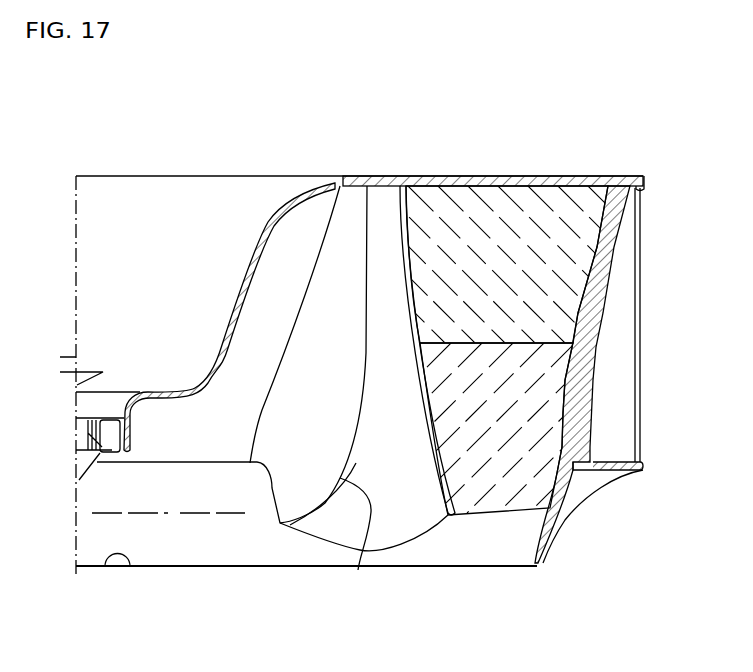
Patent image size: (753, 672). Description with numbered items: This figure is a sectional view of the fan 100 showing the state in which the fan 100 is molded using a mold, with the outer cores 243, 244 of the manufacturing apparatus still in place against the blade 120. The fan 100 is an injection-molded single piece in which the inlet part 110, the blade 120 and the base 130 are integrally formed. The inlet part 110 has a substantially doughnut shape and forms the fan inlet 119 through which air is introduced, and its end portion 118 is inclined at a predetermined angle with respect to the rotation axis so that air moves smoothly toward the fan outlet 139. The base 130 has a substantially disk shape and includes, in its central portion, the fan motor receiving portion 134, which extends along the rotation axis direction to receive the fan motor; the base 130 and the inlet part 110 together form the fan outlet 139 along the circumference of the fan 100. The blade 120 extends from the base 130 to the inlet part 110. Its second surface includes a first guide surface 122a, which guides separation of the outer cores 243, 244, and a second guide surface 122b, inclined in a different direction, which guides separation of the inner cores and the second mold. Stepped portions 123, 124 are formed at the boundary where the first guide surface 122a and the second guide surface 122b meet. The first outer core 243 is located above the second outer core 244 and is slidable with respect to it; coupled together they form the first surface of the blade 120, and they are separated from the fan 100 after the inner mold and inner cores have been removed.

The fan 100 is at (279, 126).
The inlet part 110 is at (167, 570).
The end portion 118 is at (540, 566).
The fan inlet 119 is at (105, 566).
The blade 120 is at (617, 313).
The first guide surface 122a is at (598, 234).
The second guide surface 122b is at (342, 525).
The stepped portion 123 is at (367, 241).
The stepped portion 124 is at (358, 570).
The base 130 is at (414, 173).
The fan motor receiving portion 134 is at (250, 247).
The fan outlet 139 is at (644, 188).
The first outer core 243 is at (530, 263).
The second outer core 244 is at (530, 420).